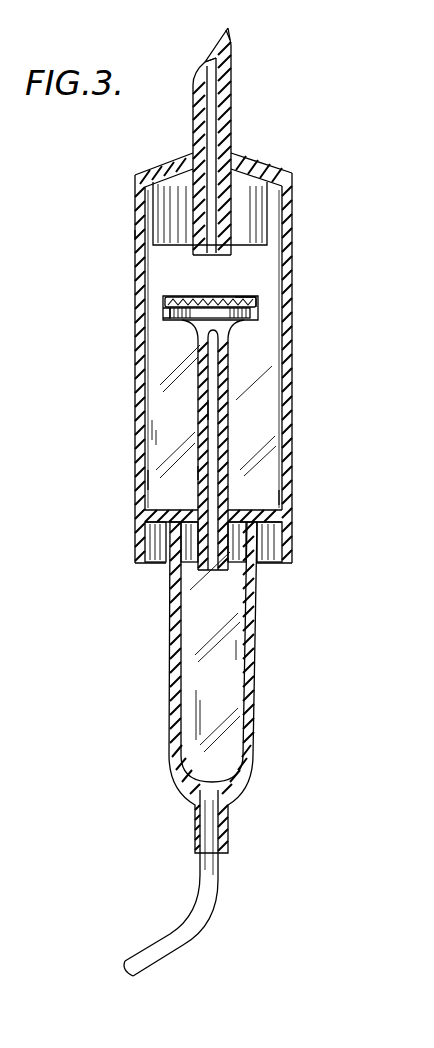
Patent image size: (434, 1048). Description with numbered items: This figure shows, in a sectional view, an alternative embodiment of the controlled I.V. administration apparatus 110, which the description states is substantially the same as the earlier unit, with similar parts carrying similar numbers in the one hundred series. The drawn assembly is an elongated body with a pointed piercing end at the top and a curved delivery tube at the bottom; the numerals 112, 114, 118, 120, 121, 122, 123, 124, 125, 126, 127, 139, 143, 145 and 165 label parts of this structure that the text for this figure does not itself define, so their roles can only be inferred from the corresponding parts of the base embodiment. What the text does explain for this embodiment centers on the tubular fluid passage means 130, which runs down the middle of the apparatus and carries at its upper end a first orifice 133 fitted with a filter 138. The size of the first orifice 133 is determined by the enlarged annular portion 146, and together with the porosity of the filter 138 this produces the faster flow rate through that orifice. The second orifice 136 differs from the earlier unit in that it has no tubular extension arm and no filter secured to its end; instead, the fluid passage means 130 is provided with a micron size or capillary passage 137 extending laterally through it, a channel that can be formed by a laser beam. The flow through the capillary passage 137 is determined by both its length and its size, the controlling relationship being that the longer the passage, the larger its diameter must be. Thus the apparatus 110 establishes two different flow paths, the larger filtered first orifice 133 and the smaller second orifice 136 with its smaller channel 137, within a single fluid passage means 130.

The controlled I.V. administration apparatus 110 is at (130, 231).
The ampule 112 is at (172, 690).
The delivery tube 114 is at (182, 948).
The needle point 118 is at (229, 40).
The housing 120 is at (293, 437).
The barrel wall 121 is at (283, 497).
The needle 122 is at (233, 97).
The needle bevel 123 is at (211, 68).
The cap 124 is at (285, 220).
The bottom wall 125 is at (283, 565).
The ampule neck opening 126 is at (190, 572).
The bottom plate 127 is at (284, 546).
The tubular fluid passage means 130 is at (224, 455).
The first orifice 133 is at (250, 320).
The second orifice 136 is at (198, 476).
The capillary passage 137 is at (203, 472).
The filter 138 is at (165, 297).
The rod bore 139 is at (218, 410).
The disc 143 is at (257, 302).
The gasket 145 is at (163, 305).
The enlarged annular portion 146 is at (165, 313).
The spacer block 165 is at (178, 535).